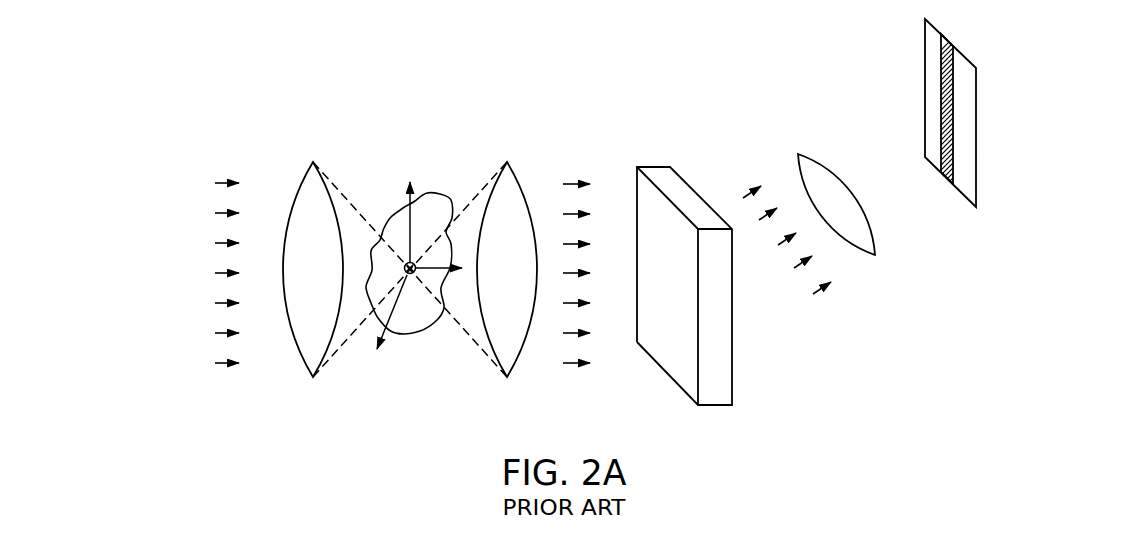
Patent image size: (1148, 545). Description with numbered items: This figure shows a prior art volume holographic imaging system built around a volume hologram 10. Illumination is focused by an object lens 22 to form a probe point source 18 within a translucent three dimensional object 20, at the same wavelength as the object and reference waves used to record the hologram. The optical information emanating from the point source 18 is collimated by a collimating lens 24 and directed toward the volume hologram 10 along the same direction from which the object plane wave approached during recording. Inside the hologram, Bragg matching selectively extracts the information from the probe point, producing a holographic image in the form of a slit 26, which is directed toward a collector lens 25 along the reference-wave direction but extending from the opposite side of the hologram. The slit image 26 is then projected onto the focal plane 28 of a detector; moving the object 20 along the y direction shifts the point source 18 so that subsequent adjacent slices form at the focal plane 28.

The volume hologram 10 is at (733, 336).
The probe point source 18 is at (412, 276).
The translucent three dimensional object 20 is at (450, 200).
The object lens 22 is at (306, 177).
The collimating lens 24 is at (510, 170).
The collector lens 25 is at (875, 255).
The slit image 26 is at (954, 122).
The focal plane of a detector 28 is at (925, 93).